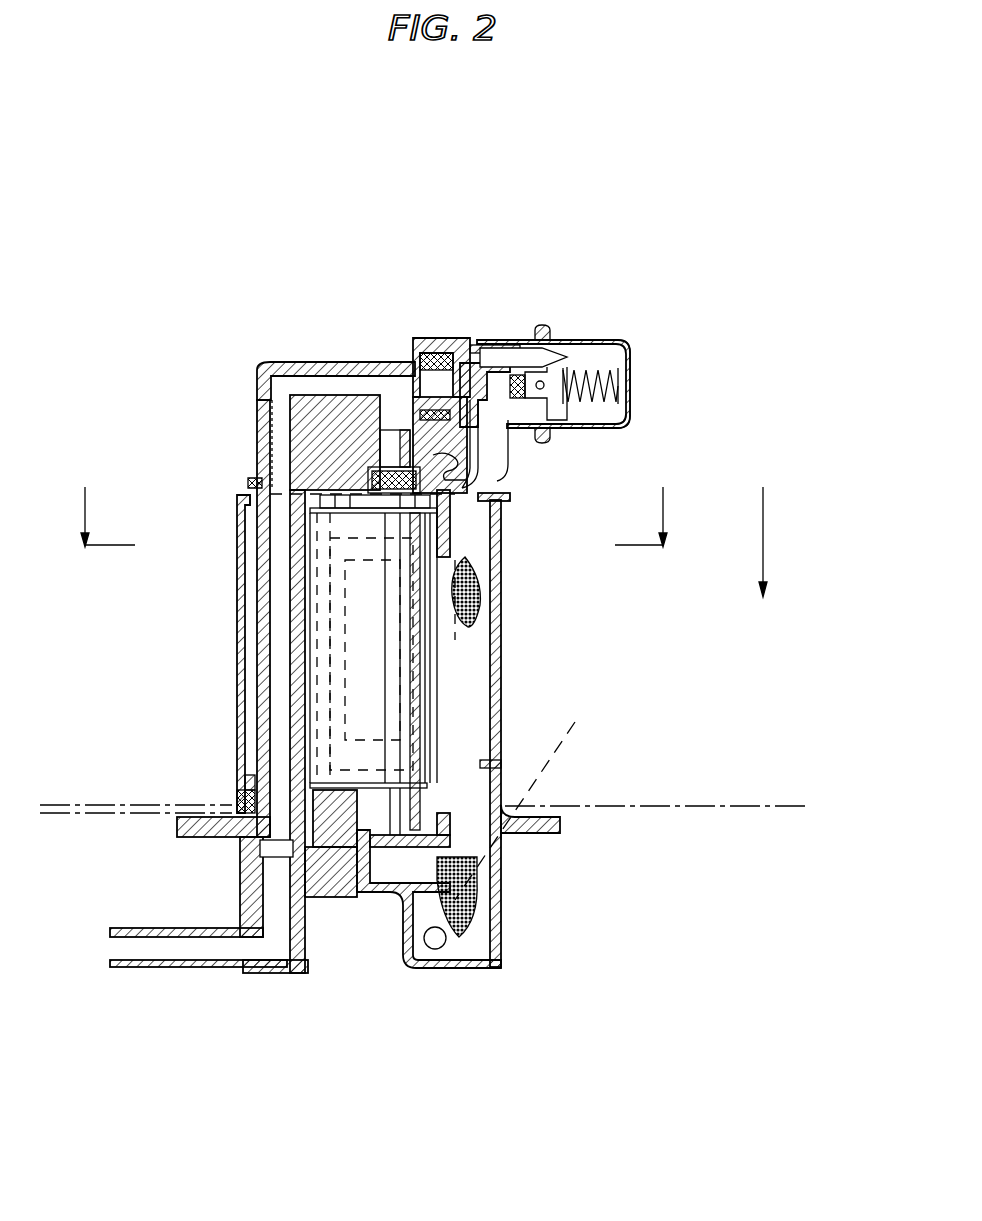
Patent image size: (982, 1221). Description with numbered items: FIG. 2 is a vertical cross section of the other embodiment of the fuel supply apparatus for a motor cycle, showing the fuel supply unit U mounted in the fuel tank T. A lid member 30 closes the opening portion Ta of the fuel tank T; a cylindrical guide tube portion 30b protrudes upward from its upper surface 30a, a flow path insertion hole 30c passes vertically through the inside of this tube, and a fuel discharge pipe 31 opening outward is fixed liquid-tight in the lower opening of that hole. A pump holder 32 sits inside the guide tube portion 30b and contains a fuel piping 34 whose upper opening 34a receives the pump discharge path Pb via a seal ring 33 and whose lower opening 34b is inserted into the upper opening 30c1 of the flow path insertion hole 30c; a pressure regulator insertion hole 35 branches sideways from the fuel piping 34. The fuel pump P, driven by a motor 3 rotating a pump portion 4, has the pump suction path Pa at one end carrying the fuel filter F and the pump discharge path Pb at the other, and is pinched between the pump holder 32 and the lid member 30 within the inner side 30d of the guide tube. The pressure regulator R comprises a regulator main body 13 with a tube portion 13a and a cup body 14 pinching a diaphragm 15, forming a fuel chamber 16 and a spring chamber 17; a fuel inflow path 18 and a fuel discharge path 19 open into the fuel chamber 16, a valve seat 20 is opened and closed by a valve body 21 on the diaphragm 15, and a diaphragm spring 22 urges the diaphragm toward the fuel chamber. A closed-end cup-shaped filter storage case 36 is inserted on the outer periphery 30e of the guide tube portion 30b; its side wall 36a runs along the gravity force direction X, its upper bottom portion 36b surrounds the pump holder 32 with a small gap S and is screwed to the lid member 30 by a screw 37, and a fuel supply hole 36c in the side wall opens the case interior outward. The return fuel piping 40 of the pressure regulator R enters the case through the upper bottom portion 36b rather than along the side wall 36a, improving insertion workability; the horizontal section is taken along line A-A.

The fuel supply unit U is at (330, 122).
The regulator main body 13 is at (443, 338).
The tube portion 13a is at (451, 345).
The cup body 14 is at (627, 413).
The diaphragm 15 is at (545, 327).
The fuel chamber 16 is at (490, 363).
The spring chamber 17 is at (625, 350).
The fuel inflow path 18 is at (440, 353).
The fuel discharge path 19 is at (500, 440).
The valve seat 20 is at (520, 350).
The valve body 21 is at (580, 427).
The diaphragm spring 22 is at (627, 387).
The motor 3 is at (515, 591).
The pump portion 4 is at (525, 800).
The lid member 30 is at (540, 833).
The upper surface 30a is at (560, 823).
The guide tube portion 30b is at (237, 790).
The flow path insertion hole 30c is at (267, 850).
The upper opening 30c1 is at (233, 797).
The inner side 30d is at (360, 712).
The outer periphery 30e is at (240, 775).
The fuel discharge pipe 31 is at (143, 955).
The pump holder 32 is at (295, 362).
The seal ring 33 is at (300, 445).
The fuel piping 34 is at (272, 567).
The upper opening 34a is at (367, 447).
The lower opening 34b is at (263, 833).
The pressure regulator insertion hole 35 is at (398, 430).
The filter storage case 36 is at (237, 613).
The side wall 36a is at (502, 662).
The upper bottom portion 36b is at (507, 496).
The fuel supply hole 36c is at (500, 757).
The screw 37 is at (258, 425).
The return fuel piping 40 is at (470, 540).
The line A- A is at (370, 527).
The fuel filter F is at (470, 615).
The fuel pump P is at (440, 648).
The pump suction path Pa is at (377, 842).
The pump discharge path Pb is at (392, 430).
The pressure regulator R is at (607, 358).
The small gap S is at (258, 478).
The fuel tank T is at (770, 810).
The opening portion Ta is at (505, 800).
The gravity force direction X is at (764, 562).